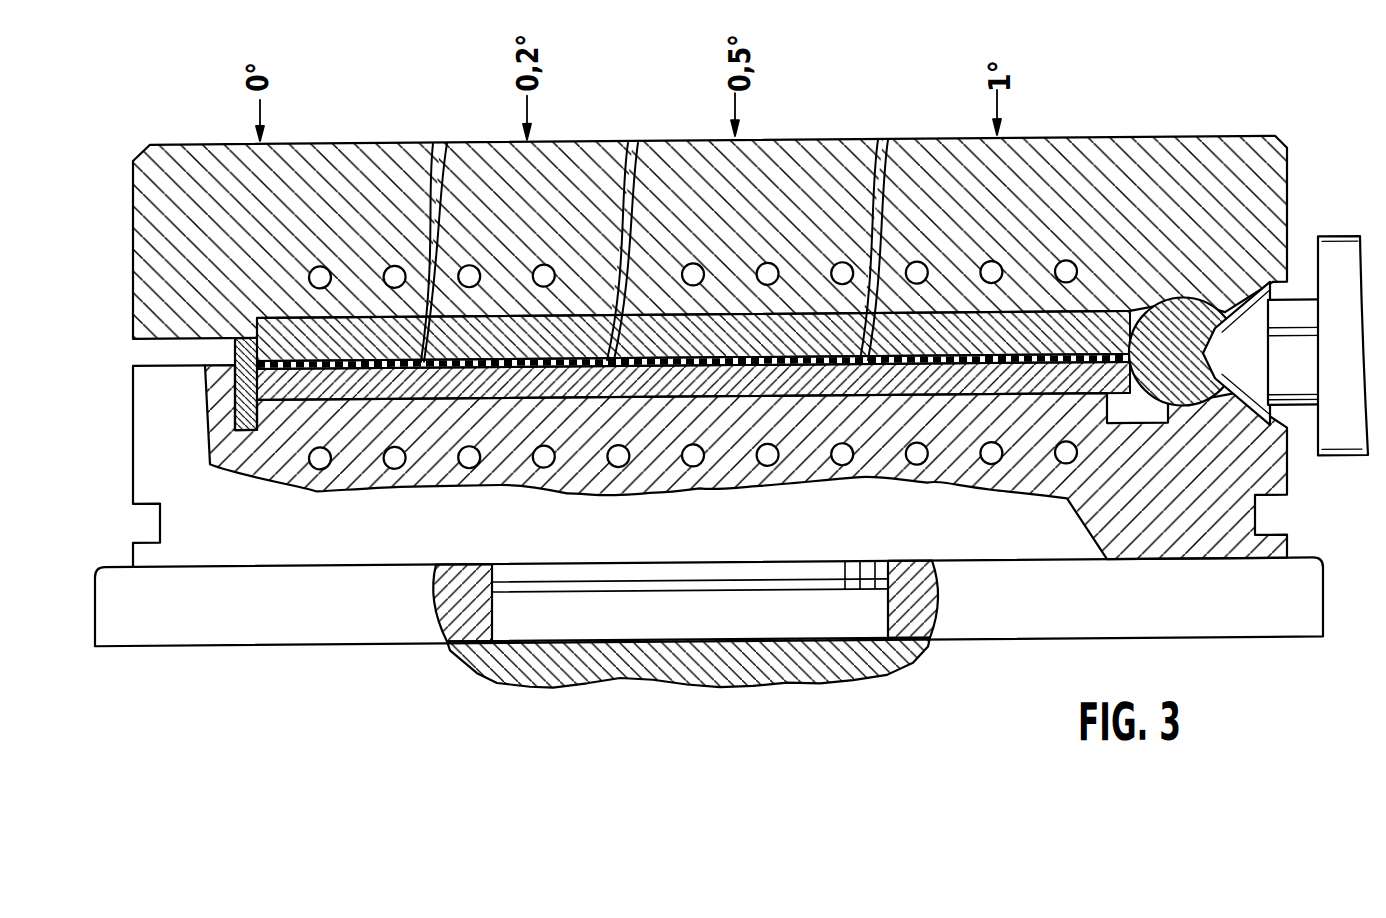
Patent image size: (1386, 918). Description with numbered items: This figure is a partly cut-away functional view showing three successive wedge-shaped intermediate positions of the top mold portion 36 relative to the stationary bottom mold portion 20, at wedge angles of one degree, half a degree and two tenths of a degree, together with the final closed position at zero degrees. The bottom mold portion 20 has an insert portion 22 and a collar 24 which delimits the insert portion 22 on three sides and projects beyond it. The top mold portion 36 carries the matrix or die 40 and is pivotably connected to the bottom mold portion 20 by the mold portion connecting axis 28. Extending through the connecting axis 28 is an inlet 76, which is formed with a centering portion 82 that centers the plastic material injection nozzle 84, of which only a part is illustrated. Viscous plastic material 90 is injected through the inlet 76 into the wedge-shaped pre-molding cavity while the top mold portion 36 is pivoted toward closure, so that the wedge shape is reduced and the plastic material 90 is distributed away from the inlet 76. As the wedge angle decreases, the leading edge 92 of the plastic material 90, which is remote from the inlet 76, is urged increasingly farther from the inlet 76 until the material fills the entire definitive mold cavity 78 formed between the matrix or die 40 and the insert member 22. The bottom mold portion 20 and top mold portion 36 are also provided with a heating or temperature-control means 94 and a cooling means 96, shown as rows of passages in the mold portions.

The bottom mold portion 20 is at (748, 556).
The insert portion 22 is at (302, 386).
The collar 24 is at (245, 395).
The mold portion connecting axis 28 is at (1195, 300).
The top mold portion 36 is at (552, 208).
The matrix or die 40 is at (257, 340).
The inlet 76 is at (1172, 300).
The mold cavity 78 is at (353, 378).
The centering portion 82 is at (1280, 440).
The plastic material injection nozzle 84 is at (1330, 265).
The plastic material 90 is at (677, 370).
The leading edge 92 is at (643, 160).
The heating or temperature-control means 94 is at (469, 272).
The cooling means 96 is at (538, 472).